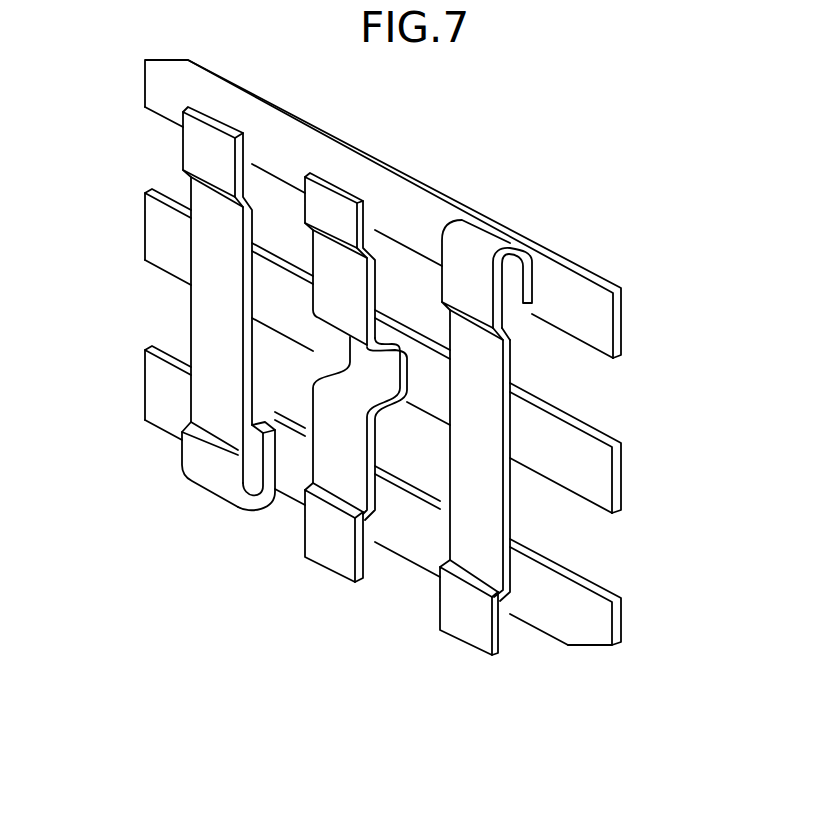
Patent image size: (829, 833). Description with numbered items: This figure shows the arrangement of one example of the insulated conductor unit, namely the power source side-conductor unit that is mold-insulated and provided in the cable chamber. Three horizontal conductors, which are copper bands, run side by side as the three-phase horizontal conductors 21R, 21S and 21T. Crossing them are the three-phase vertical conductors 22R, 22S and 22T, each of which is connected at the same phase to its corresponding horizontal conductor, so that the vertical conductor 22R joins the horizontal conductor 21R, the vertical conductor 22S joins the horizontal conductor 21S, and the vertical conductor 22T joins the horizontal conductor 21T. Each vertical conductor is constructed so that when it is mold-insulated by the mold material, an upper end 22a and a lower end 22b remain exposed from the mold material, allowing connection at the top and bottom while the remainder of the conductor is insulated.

The three-phase horizontal conductor 21R is at (602, 325).
The three-phase horizontal conductor 21S is at (602, 483).
The three-phase horizontal conductor 21T is at (602, 623).
The three-phase vertical conductor 22T is at (208, 335).
The three-phase vertical conductor 22S is at (332, 452).
The three-phase vertical conductor 22R is at (521, 438).
The upper end 22a is at (468, 266).
The lower end 22b is at (467, 620).